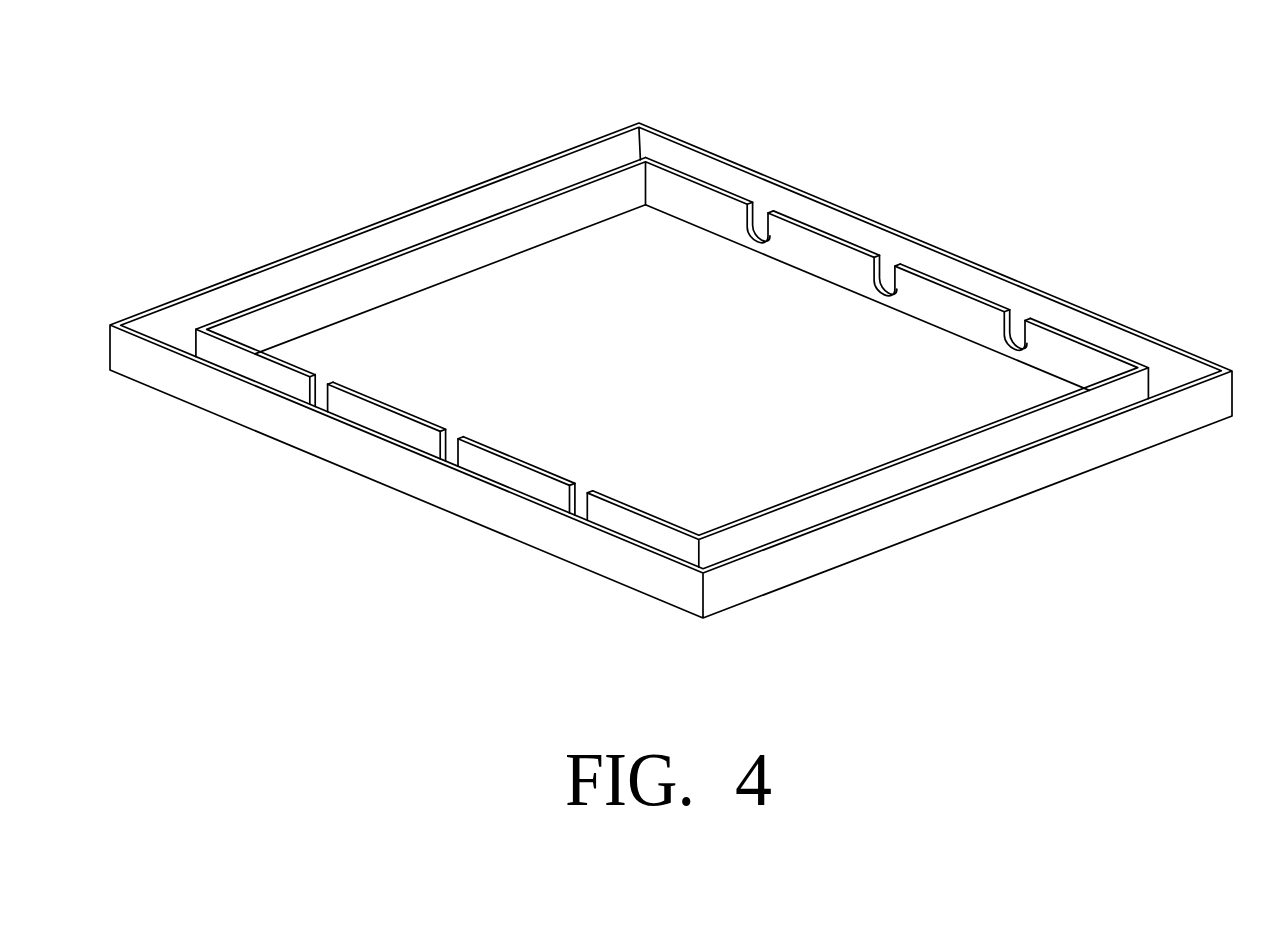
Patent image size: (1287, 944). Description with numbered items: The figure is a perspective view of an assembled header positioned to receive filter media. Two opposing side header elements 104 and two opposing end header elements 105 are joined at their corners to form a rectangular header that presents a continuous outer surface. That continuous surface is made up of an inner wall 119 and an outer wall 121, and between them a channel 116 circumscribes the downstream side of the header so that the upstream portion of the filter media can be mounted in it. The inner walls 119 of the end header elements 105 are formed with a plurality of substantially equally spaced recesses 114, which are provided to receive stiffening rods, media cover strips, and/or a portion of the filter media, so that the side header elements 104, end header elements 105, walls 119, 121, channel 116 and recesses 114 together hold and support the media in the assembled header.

The side header element 104 is at (323, 244).
The end header element 105 is at (978, 267).
The recess 114 is at (892, 290).
The channel 116 is at (1159, 377).
The inner wall 119 is at (702, 207).
The outer wall 121 is at (466, 206).